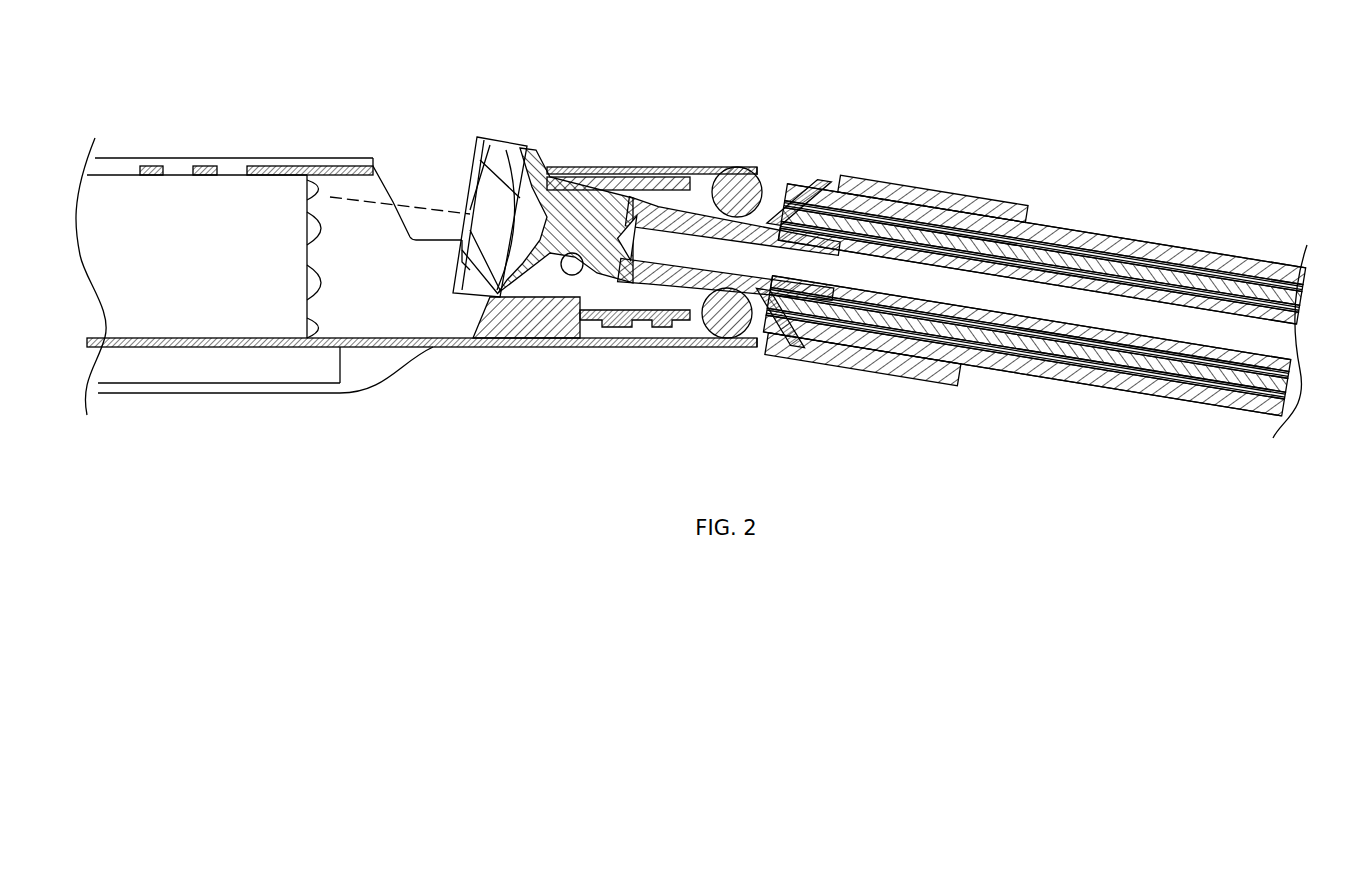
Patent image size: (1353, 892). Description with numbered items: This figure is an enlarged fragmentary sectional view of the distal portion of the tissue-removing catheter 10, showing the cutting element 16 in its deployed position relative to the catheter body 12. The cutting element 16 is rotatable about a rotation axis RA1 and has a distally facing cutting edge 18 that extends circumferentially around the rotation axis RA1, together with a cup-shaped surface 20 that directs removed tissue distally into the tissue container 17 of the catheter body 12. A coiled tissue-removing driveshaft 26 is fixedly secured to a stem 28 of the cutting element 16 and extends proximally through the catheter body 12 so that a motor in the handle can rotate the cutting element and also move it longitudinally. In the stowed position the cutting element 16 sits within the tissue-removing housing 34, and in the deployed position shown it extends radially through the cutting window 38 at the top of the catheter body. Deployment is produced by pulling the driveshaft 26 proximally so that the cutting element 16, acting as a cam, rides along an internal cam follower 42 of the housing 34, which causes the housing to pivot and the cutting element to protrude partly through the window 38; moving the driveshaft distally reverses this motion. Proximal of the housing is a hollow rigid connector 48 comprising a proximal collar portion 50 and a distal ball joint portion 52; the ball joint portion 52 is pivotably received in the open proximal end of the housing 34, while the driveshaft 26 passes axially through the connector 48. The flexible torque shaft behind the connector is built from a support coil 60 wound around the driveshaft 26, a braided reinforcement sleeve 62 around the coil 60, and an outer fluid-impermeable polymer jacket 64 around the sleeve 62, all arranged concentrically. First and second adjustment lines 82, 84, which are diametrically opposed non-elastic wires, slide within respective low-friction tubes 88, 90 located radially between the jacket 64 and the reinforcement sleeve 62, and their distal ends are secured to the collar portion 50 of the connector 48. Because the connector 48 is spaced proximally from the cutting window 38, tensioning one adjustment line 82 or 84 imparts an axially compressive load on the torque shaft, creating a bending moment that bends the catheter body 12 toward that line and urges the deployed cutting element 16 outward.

The tissue-removing catheter 10 is at (1096, 42).
The catheter body 12 is at (1188, 240).
The cutting element 16 is at (532, 152).
The tissue container 17 is at (175, 165).
The cutting edge 18 is at (476, 140).
The cup-shaped surface 20 is at (465, 252).
The tissue-removing driveshaft 26 is at (1050, 242).
The stem 28 is at (706, 196).
The tissue-removing housing 34 is at (568, 347).
The cutting window 38 is at (386, 172).
The internal cam follower 42 is at (500, 312).
The rigid connector 48 is at (820, 180).
The proximal collar portion 50 is at (931, 194).
The distal ball joint portion 52 is at (740, 178).
The support coil 60 is at (1256, 304).
The reinforcement sleeve 62 is at (1145, 367).
The outer fluid-impermeable jacket 64 is at (1273, 430).
The first adjustment line 82 is at (1242, 262).
The second adjustment line 84 is at (1206, 394).
The tube 88 is at (1283, 264).
The tube 90 is at (894, 360).
The rotation axis RA1 is at (353, 190).